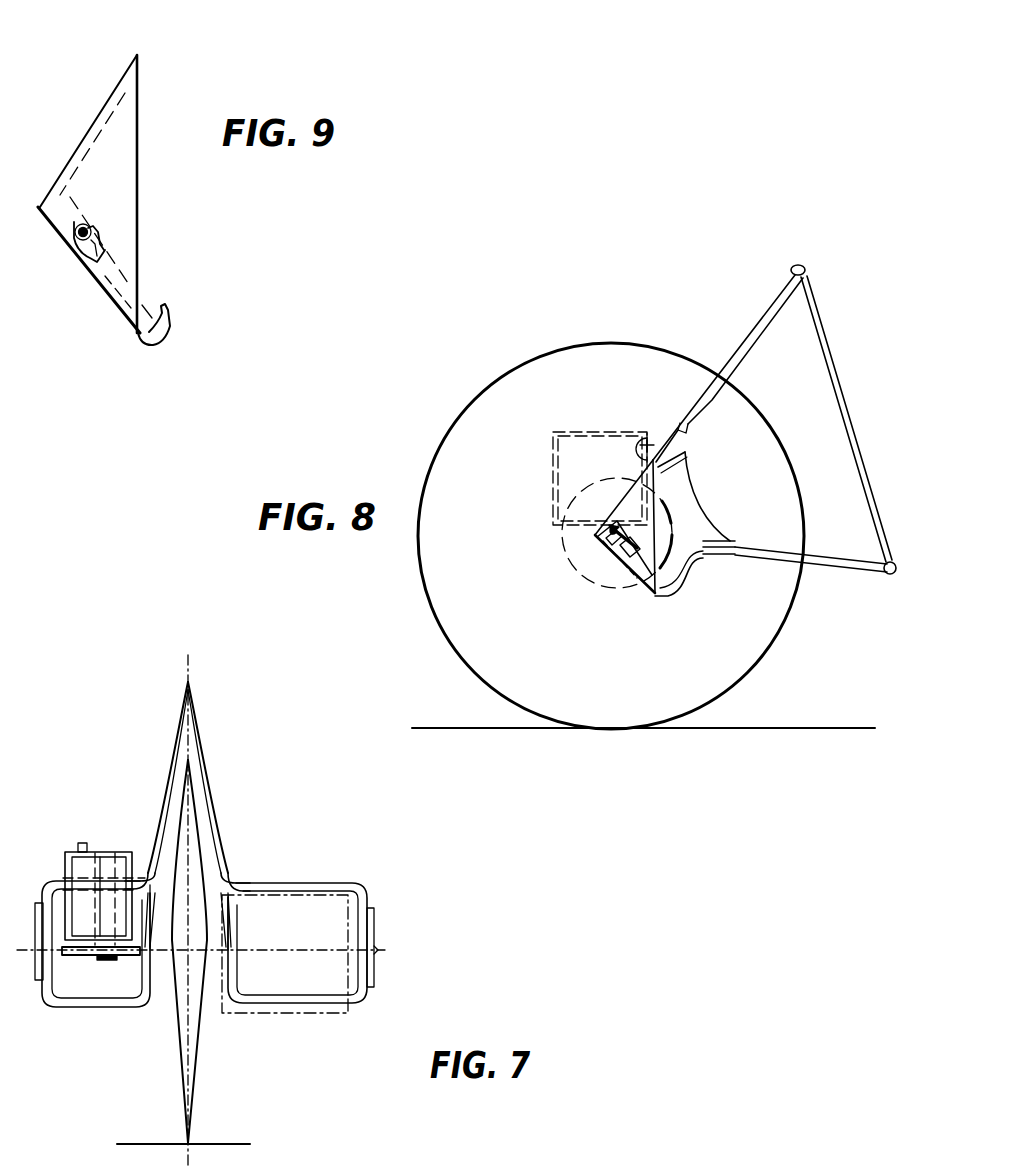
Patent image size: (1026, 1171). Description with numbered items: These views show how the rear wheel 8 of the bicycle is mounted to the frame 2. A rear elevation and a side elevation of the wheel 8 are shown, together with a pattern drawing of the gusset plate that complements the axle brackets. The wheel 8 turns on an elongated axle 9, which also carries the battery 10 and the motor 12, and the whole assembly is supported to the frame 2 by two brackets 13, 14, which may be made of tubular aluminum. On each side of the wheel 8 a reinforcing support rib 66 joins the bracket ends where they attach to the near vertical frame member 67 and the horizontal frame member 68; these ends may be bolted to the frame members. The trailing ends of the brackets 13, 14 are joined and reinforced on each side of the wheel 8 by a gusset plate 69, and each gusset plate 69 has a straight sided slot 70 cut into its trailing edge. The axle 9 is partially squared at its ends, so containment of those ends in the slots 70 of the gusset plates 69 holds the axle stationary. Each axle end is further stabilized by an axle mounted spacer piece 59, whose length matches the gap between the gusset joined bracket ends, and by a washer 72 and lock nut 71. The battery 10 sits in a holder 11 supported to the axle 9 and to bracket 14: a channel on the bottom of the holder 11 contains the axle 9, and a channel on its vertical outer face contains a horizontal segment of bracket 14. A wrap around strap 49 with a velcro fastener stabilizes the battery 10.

In FIG. 7, the frame 2 is at (216, 815).
In FIG. 8, the rear wheel 8 is at (538, 352).
In FIG. 7, the rear wheel 8 is at (205, 1117).
In FIG. 9, the elongated axle 9 is at (88, 270).
In FIG. 8, the elongated axle 9 is at (608, 542).
In FIG. 7, the elongated axle 9 is at (380, 950).
In FIG. 8, the battery 10 is at (597, 432).
In FIG. 8, the holder 11 is at (636, 436).
In FIG. 7, the holder 11 is at (132, 850).
In FIG. 8, the motor 12 is at (616, 612).
In FIG. 7, the motor 12 is at (314, 1019).
In FIG. 9, the bracket 13 is at (149, 304).
In FIG. 8, the bracket 13 is at (696, 585).
In FIG. 7, the bracket 13 is at (367, 887).
In FIG. 7, the bracket 14 is at (92, 1008).
In FIG. 8, the wrap around strap 49 is at (552, 459).
In FIG. 7, the wrap around strap 49 is at (98, 850).
In FIG. 9, the spacer piece 59 is at (74, 242).
In FIG. 8, the spacer piece 59 is at (617, 561).
In FIG. 8, the reinforcing support rib 66 is at (697, 489).
In FIG. 7, the reinforcing support rib 66 is at (152, 877).
In FIG. 8, the near vertical frame member 67 is at (764, 321).
In FIG. 8, the horizontal frame member 68 is at (878, 577).
In FIG. 9, the gusset plate 69 is at (152, 229).
In FIG. 8, the gusset plate 69 is at (645, 606).
In FIG. 7, the gusset plate 69 is at (36, 886).
In FIG. 9, the straight sided slot 70 is at (95, 278).
In FIG. 8, the straight sided slot 70 is at (621, 569).
In FIG. 7, the lock nut 71 is at (28, 962).
In FIG. 7, the washer 72 is at (27, 948).